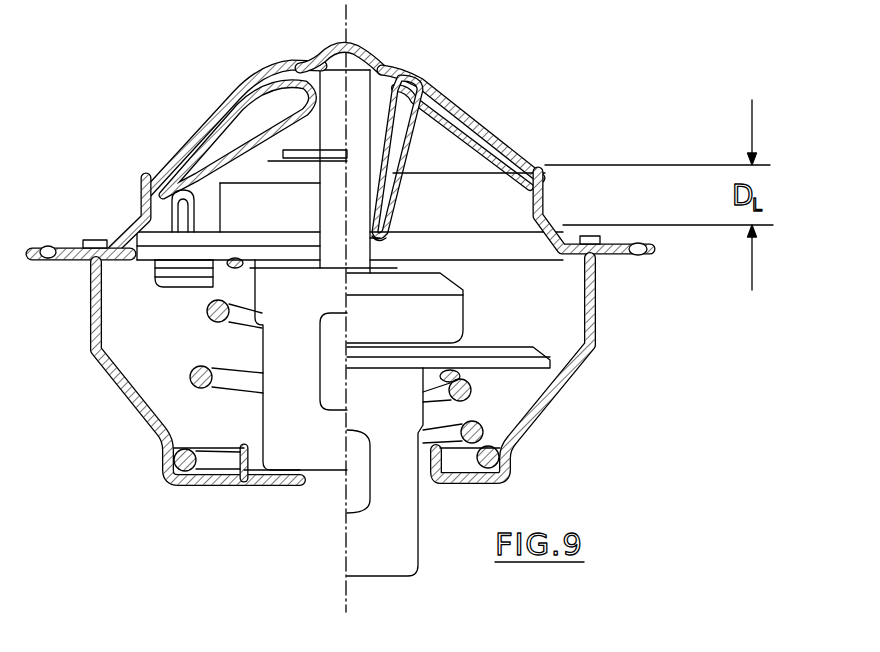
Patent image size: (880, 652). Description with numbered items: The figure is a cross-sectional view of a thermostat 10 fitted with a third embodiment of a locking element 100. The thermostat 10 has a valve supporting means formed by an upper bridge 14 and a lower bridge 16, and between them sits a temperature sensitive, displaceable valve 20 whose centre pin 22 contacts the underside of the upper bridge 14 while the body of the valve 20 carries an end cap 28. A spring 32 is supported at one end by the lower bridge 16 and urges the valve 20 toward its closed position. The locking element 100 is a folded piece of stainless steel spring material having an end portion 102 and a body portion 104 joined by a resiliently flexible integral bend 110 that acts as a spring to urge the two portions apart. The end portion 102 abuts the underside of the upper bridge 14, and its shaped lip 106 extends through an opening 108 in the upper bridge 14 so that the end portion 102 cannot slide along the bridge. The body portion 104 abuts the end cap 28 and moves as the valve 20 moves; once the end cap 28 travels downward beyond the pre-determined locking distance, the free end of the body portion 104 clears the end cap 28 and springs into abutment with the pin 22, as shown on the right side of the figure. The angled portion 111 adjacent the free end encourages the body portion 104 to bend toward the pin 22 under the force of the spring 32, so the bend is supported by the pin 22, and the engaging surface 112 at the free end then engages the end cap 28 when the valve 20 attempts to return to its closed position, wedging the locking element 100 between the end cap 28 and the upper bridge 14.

The thermostat 10 is at (597, 376).
The upper bridge 14 is at (248, 80).
The lower bridge 16 is at (123, 402).
The temperature sensitive valve 20 is at (382, 247).
The pin 22 is at (353, 92).
The end cap 28 is at (324, 226).
The spring 32 is at (507, 457).
The locking element 100 is at (213, 100).
The end portion 102 is at (187, 133).
The body portion 104 is at (227, 173).
The shaped lip 106 is at (138, 180).
The opening 108 is at (147, 183).
The integral bend 110 is at (301, 67).
The angled portion 111 is at (383, 212).
The engaging surface 112 is at (382, 237).